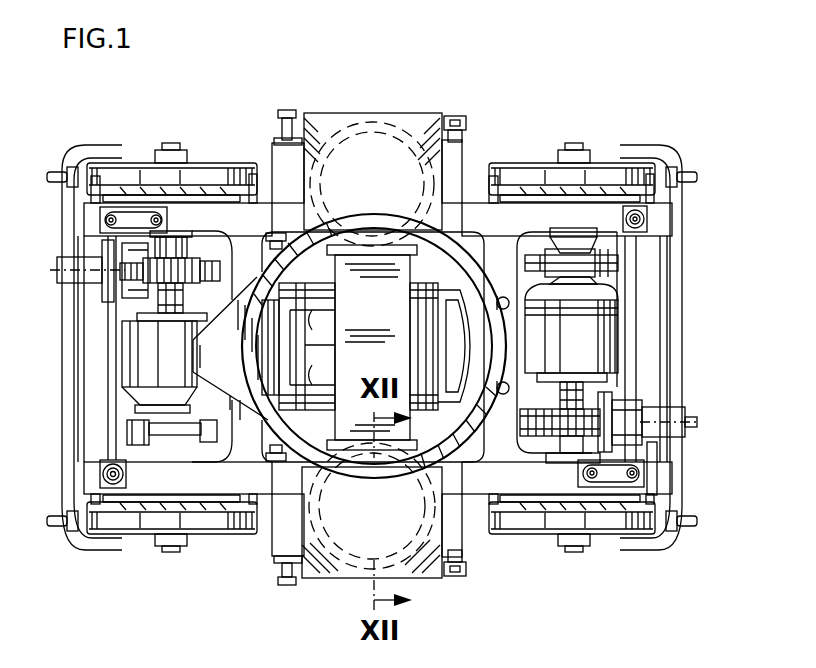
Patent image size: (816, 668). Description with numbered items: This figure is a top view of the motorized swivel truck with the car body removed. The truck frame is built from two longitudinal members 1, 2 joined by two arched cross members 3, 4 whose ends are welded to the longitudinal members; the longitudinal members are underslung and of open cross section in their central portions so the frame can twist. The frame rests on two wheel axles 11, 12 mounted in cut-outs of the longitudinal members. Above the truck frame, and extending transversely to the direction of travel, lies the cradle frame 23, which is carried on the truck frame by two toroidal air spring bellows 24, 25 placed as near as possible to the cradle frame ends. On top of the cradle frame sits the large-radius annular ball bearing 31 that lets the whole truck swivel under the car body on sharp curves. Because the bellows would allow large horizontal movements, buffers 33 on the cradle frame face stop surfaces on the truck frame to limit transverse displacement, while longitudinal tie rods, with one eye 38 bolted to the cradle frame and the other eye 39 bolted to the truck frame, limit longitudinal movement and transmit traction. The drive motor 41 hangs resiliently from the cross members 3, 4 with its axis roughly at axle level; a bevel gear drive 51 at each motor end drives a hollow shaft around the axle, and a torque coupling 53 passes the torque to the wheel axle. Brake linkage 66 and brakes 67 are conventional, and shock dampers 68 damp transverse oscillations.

The longitudinal member 1 is at (582, 206).
The longitudinal member 2 is at (505, 476).
The cross member 3 is at (503, 418).
The cross member 4 is at (240, 285).
The wheel axle 11 is at (568, 390).
The wheel axle 12 is at (170, 304).
The cradle frame 23 is at (397, 116).
The toroidal air spring bellows 24 is at (337, 136).
The toroidal air spring bellows 25 is at (352, 565).
The annular ball bearing 31 is at (481, 248).
The buffer 33 is at (274, 232).
The eye of tie rod 38 is at (463, 122).
The eye of tie rod 39 is at (283, 108).
The drive motor 41 is at (420, 320).
The bevel gear drive 51 is at (132, 368).
The torque coupling 53 is at (117, 430).
The brake linkage 66 is at (637, 385).
The brake 67 is at (598, 458).
The shock damper 68 is at (190, 450).